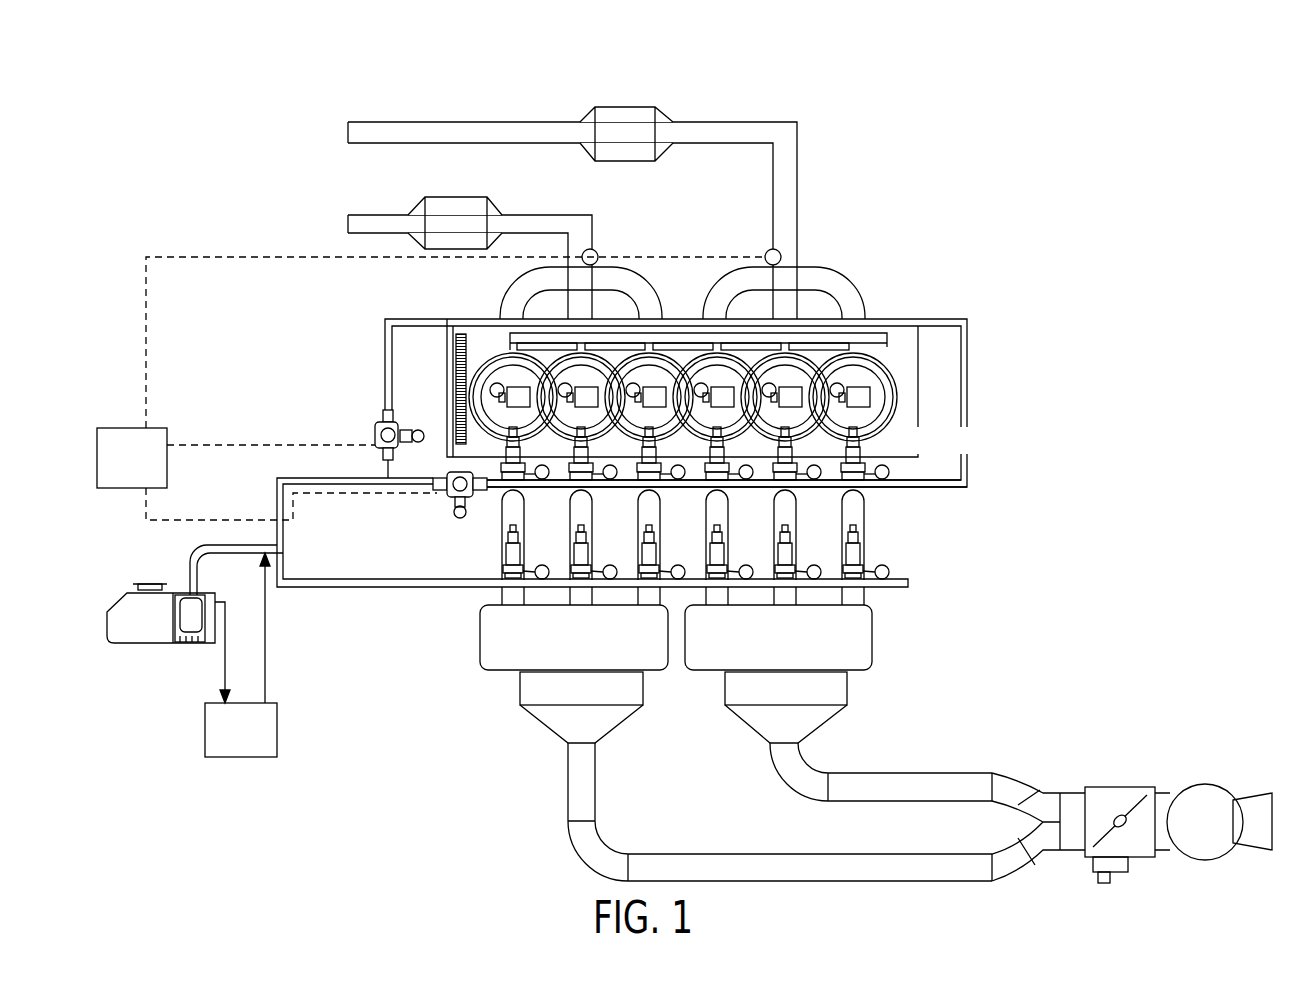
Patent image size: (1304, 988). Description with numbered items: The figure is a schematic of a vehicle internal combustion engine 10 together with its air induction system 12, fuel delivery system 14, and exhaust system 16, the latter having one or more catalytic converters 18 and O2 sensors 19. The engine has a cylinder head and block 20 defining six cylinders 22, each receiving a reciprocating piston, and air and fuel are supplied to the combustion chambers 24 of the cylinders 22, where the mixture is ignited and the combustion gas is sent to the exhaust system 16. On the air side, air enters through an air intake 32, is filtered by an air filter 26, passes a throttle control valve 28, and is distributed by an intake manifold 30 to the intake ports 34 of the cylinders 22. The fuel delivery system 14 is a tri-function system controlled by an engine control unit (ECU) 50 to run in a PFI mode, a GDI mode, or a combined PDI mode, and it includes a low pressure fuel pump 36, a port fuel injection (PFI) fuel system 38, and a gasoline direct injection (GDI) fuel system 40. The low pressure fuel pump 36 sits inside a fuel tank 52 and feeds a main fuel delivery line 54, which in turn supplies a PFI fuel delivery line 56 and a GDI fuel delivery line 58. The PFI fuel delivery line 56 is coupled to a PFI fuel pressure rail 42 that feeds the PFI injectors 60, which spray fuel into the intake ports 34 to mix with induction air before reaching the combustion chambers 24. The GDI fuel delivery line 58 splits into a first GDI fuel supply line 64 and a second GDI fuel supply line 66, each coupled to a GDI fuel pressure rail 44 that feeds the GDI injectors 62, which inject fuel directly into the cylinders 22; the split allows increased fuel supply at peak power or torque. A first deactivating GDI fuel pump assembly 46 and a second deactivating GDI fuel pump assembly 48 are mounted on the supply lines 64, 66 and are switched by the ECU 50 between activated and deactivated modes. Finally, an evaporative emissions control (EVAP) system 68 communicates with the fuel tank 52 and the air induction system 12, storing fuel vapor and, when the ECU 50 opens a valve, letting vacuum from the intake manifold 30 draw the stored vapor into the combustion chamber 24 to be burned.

The internal combustion engine 10 is at (1052, 152).
The air induction system 12 is at (1178, 711).
The fuel delivery system 14 is at (257, 388).
The exhaust system 16 is at (466, 100).
The catalytic converter 18 is at (628, 128).
The O2 sensor 19 is at (592, 249).
The cylinder head and block 20 is at (900, 318).
The cylinder 22 is at (493, 375).
The combustion chamber 24 is at (493, 412).
The air filter 26 is at (1212, 800).
The throttle control valve 28 is at (1125, 787).
The intake manifold 30 is at (648, 672).
The air intake 32 is at (1260, 800).
The intake port 34 is at (837, 533).
The low pressure fuel pump 36 is at (185, 640).
The port fuel injection (PFI) fuel system 38 is at (456, 634).
The gasoline direct injection (GDI) fuel system 40 is at (292, 352).
The PFI fuel pressure rail 42 is at (885, 590).
The GDI fuel pressure rail 44 is at (615, 487).
The first deactivating GDI fuel pump assembly 46 is at (365, 424).
The second deactivating GDI fuel pump assembly 48 is at (455, 500).
The engine control unit (ECU) 50 is at (130, 428).
The fuel tank 52 is at (150, 645).
The main fuel delivery line 54 is at (237, 553).
The PFI fuel delivery line 56 is at (378, 587).
The GDI fuel delivery line 58 is at (277, 495).
The PFI injector 60 is at (715, 550).
The GDI injector 62 is at (730, 477).
The first GDI fuel supply line 64 is at (385, 338).
The second GDI fuel supply line 66 is at (407, 490).
The evaporative emissions control (EVAP) system 68 is at (205, 735).